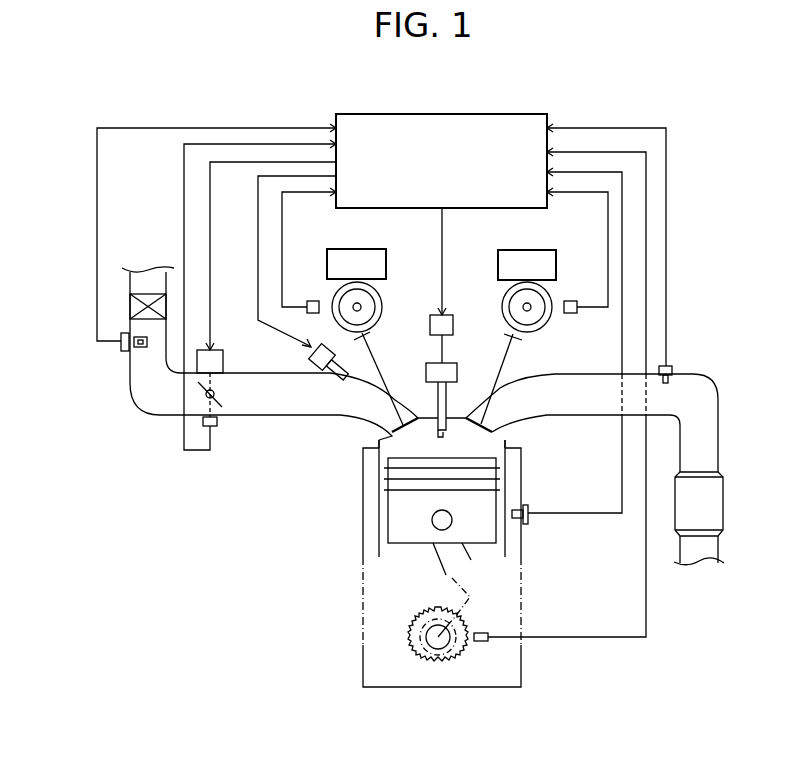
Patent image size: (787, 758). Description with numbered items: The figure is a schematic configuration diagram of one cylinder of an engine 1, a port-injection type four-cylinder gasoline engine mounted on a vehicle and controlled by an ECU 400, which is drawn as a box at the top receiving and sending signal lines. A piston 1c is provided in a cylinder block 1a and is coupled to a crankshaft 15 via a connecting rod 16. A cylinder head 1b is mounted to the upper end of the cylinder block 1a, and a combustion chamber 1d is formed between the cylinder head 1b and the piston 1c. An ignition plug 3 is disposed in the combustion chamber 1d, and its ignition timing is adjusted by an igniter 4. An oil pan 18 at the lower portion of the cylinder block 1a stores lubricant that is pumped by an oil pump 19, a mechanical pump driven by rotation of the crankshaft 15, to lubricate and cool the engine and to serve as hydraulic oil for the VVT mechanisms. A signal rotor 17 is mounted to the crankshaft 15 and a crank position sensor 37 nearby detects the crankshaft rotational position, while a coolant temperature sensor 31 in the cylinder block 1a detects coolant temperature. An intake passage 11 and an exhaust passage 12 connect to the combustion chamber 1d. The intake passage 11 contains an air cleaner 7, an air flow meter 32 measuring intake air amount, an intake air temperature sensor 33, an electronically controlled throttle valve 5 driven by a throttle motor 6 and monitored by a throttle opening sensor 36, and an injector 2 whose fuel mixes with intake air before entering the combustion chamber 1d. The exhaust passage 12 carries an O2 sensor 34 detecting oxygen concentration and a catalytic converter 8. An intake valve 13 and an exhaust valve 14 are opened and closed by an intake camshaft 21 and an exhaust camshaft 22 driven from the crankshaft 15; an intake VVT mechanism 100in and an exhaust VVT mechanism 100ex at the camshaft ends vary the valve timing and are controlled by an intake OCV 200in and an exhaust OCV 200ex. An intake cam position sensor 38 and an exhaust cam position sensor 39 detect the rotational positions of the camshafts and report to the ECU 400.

The engine 1 is at (355, 512).
The cylinder block 1a is at (521, 538).
The cylinder head 1b is at (452, 416).
The piston 1c is at (397, 527).
The combustion chamber 1d is at (408, 450).
The injector 2 is at (309, 357).
The ignition plug 3 is at (430, 364).
The igniter 4 is at (456, 326).
The throttle valve 5 is at (214, 392).
The throttle motor 6 is at (217, 350).
The air cleaner 7 is at (148, 296).
The catalytic converter 8 is at (724, 506).
The intake passage 11 is at (167, 412).
The exhaust passage 12 is at (657, 416).
The intake valve 13 is at (387, 402).
The exhaust valve 14 is at (490, 399).
The crankshaft 15 is at (427, 637).
The connecting rod 16 is at (466, 555).
The signal rotor 17 is at (417, 612).
The oil pan 18 is at (363, 667).
The oil pump 19 is at (453, 647).
The intake camshaft 21 is at (362, 310).
The exhaust camshaft 22 is at (533, 309).
The coolant temperature sensor 31 is at (521, 507).
The air flow meter 32 is at (121, 350).
The intake air temperature sensor 33 is at (141, 350).
The O2 sensor 34 is at (672, 366).
The throttle opening sensor 36 is at (216, 427).
The crank position sensor 37 is at (484, 632).
The intake cam position sensor 38 is at (311, 301).
The exhaust cam position sensor 39 is at (572, 300).
The intake VVT mechanism 100in is at (386, 306).
The exhaust VVT mechanism 100ex is at (486, 311).
The intake oil control valve 200in is at (362, 249).
The exhaust oil control valve 200ex is at (524, 250).
The ECU 400 is at (505, 112).